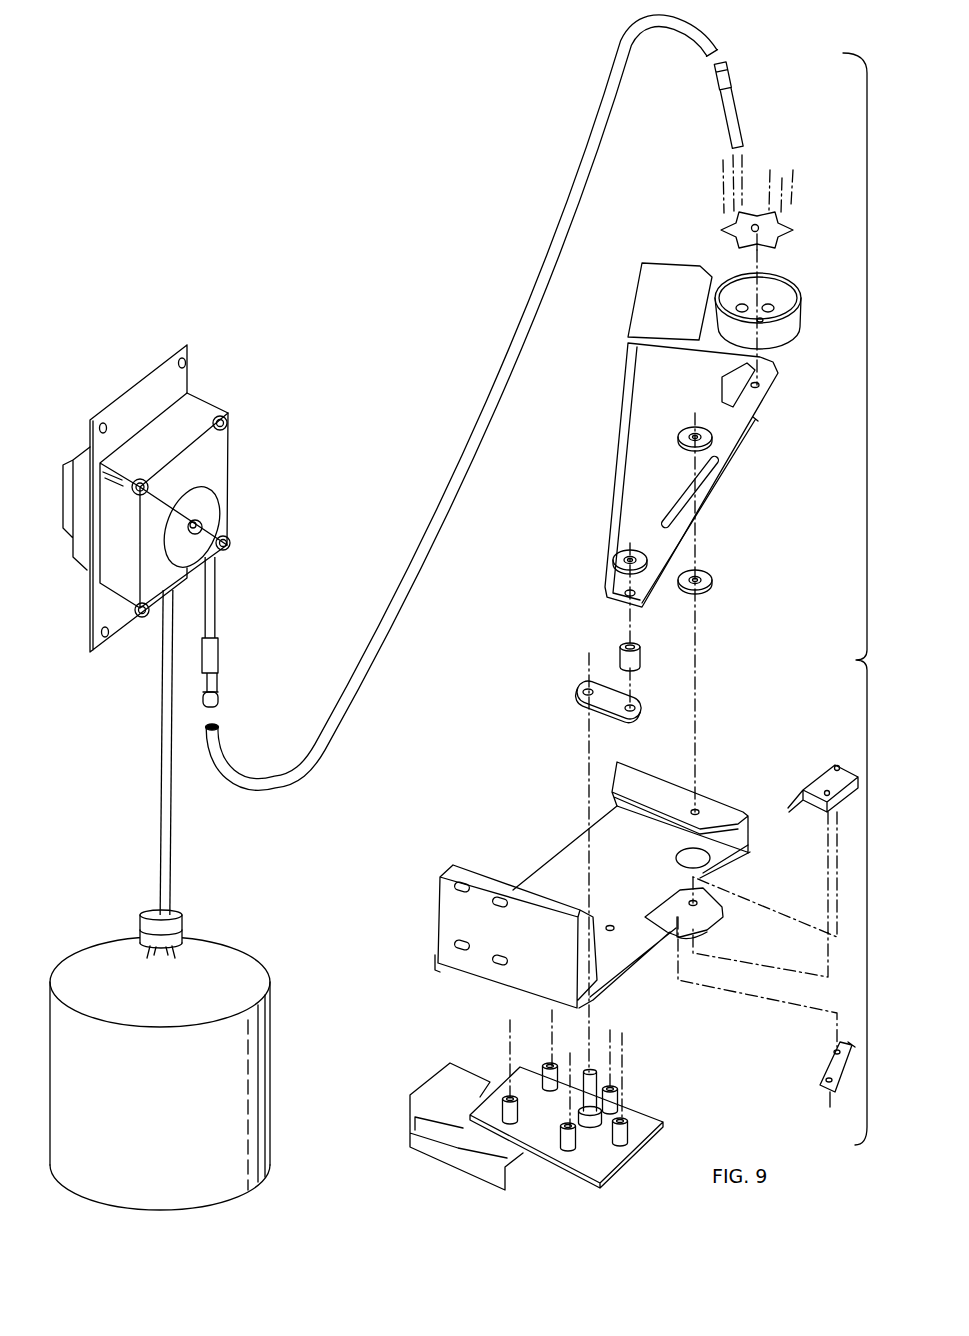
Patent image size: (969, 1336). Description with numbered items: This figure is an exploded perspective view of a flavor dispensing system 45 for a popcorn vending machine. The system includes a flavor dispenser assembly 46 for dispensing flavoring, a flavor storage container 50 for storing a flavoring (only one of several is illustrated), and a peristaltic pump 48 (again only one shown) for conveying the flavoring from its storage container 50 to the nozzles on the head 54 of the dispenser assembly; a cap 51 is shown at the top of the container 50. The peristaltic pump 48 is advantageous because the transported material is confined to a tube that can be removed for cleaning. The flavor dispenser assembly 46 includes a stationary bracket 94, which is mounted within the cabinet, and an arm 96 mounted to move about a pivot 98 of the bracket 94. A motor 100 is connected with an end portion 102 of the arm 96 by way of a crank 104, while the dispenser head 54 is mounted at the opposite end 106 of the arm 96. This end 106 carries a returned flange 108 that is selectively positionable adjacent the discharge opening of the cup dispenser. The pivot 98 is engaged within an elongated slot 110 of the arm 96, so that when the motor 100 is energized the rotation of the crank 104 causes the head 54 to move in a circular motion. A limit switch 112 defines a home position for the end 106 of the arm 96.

The flavor dispensing system 45 is at (449, 767).
The flavor dispenser assembly 46 is at (845, 599).
The peristaltic pump 48 is at (200, 405).
The flavor storage container 50 is at (271, 1066).
The reservoir cap 51 is at (254, 953).
The head 54 is at (778, 277).
The stationary bracket 94 is at (557, 857).
The arm 96 is at (740, 448).
The pivot 98 is at (697, 552).
The motor 100 is at (458, 1162).
The end portion 102 is at (607, 588).
The crank 104 is at (603, 715).
The opposite end 106 is at (770, 367).
The returned flange 108 is at (675, 273).
The elongated slot 110 is at (710, 482).
The limit switch 112 is at (818, 775).